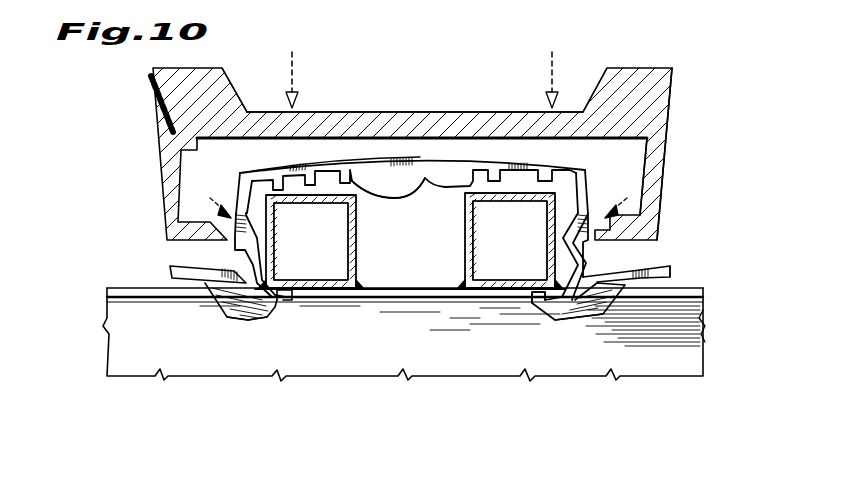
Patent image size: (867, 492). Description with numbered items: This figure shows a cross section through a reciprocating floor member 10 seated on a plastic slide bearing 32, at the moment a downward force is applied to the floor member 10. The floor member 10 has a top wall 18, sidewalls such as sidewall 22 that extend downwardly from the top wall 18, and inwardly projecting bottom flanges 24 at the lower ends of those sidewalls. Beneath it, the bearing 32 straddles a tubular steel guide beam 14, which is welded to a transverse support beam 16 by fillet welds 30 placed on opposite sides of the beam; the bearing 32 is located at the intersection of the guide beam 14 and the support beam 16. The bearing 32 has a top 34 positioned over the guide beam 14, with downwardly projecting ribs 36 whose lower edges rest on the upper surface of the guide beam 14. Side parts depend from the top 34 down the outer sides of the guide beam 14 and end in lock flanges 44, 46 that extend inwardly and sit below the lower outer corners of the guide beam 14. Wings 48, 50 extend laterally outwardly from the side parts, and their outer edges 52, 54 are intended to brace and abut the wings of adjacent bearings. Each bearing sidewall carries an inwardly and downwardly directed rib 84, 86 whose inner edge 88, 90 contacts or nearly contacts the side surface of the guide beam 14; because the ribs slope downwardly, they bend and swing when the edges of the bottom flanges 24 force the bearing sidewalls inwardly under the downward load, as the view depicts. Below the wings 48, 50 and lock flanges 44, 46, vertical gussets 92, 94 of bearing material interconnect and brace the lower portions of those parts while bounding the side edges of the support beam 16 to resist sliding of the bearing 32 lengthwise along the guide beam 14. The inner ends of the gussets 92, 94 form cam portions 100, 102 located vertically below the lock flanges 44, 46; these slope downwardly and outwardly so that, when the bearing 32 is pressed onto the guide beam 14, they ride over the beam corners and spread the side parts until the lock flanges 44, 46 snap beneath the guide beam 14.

The floor member 10 is at (420, 98).
The guide beam 14 is at (467, 235).
The transverse support beam 16 is at (653, 368).
The top wall 18 is at (340, 112).
The sidewall 22 is at (155, 186).
The bottom flange 24 is at (673, 131).
The fillet weld 30 is at (462, 281).
The bearing 32 is at (611, 172).
The top 34 is at (316, 160).
The rib 36 is at (395, 198).
The lock flange 44 is at (263, 318).
The lock flange 46 is at (572, 320).
The wing 48 is at (193, 262).
The wing 50 is at (642, 270).
The outer edge 52 is at (170, 271).
The outer edge 54 is at (673, 271).
The rib 84 is at (272, 205).
The rib 86 is at (560, 208).
The inner edge 88 is at (270, 242).
The inner edge 90 is at (550, 245).
The gusset 92 is at (237, 308).
The gusset 94 is at (603, 316).
The cam portion 100 is at (278, 322).
The cam portion 102 is at (543, 320).